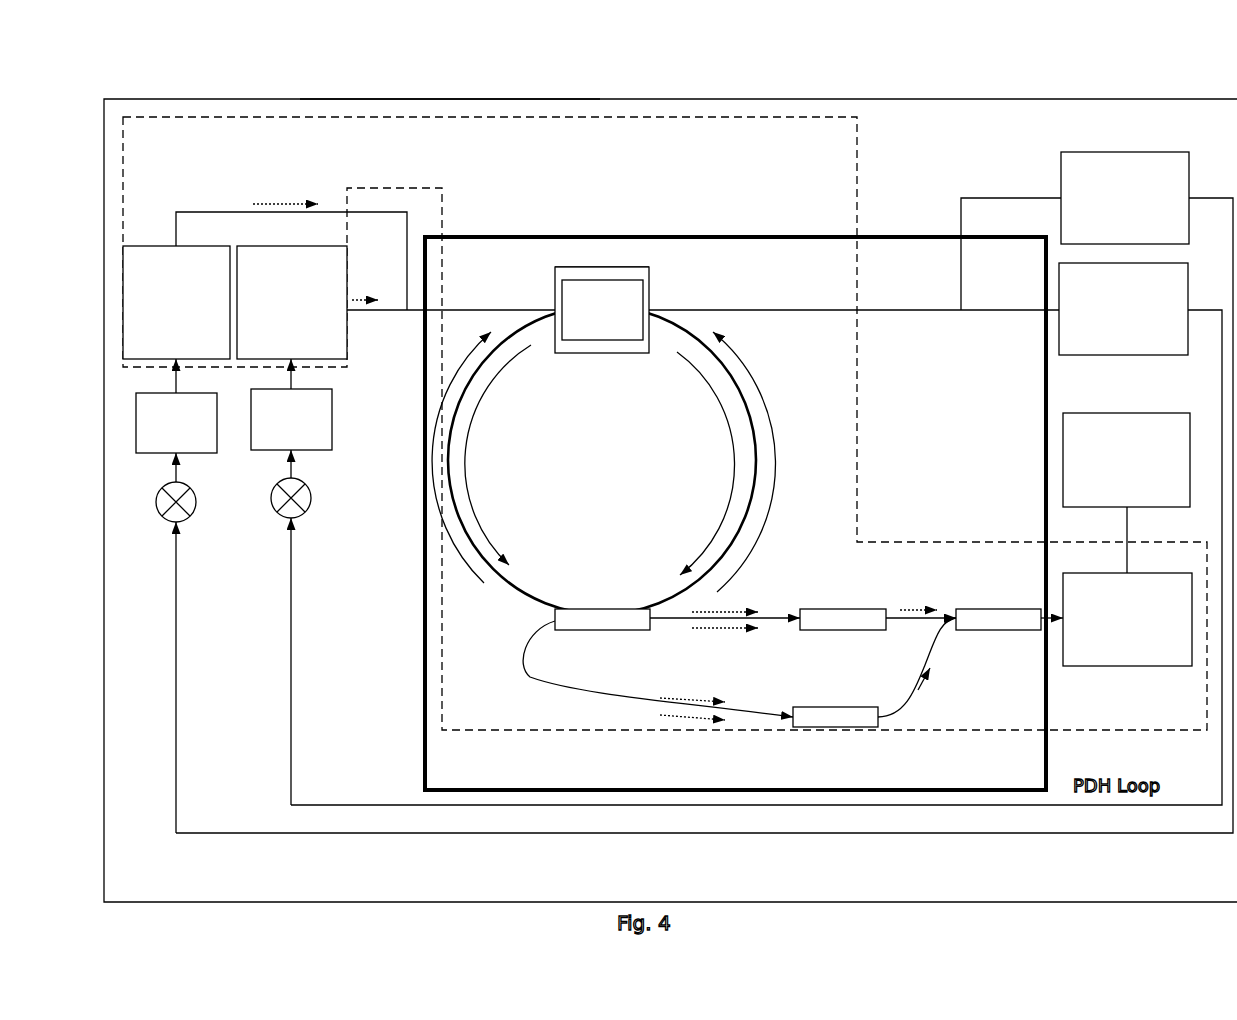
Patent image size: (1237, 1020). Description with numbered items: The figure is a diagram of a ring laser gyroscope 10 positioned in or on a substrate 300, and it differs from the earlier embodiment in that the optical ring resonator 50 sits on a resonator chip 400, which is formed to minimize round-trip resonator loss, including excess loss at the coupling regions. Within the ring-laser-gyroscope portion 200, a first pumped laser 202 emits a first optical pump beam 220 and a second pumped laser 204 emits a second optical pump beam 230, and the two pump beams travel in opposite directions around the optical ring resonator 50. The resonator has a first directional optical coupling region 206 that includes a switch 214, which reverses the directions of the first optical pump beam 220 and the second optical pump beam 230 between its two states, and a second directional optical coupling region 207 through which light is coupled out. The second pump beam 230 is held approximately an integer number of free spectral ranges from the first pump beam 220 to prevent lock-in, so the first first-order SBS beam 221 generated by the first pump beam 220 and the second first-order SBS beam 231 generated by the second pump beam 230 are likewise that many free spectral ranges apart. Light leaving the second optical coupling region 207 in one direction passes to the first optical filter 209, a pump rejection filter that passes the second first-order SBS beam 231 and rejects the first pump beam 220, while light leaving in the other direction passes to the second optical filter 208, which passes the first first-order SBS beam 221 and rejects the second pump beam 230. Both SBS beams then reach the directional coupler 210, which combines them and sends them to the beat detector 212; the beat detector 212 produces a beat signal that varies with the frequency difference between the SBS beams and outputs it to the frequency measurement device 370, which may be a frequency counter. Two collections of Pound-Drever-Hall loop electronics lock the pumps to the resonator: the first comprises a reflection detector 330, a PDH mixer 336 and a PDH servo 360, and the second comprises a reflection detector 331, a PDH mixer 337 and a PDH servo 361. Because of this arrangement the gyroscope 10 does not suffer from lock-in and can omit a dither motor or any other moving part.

The ring laser gyroscope 10 is at (226, 890).
The substrate 300 is at (440, 99).
The ring-laser-gyroscope portion 200 is at (857, 190).
The resonator chip 400 is at (690, 237).
The optical ring resonator 50 is at (508, 593).
The pumped laser 204 is at (160, 341).
The pumped laser 202 is at (275, 341).
The PDH servo 361 is at (161, 446).
The PDH servo 360 is at (276, 443).
The PDH mixer 337 is at (157, 500).
The PDH mixer 336 is at (271, 497).
The switch 214 is at (588, 331).
The first directional optical coupling region 206 is at (605, 265).
The second directional optical coupling region 207 is at (602, 632).
The second optical filter 208 is at (862, 608).
The first optical filter 209 is at (862, 728).
The directional coupler 210 is at (973, 632).
The beat detector 212 is at (1112, 657).
The reflection detector 330 is at (1109, 346).
The reflection detector 331 is at (1110, 235).
The frequency measurement device 370 is at (1112, 497).
The first optical pump beam 220 is at (358, 297).
The second optical pump beam 230 is at (282, 203).
The first first-order SBS beam 221 is at (745, 362).
The second first-order SBS beam 231 is at (430, 456).